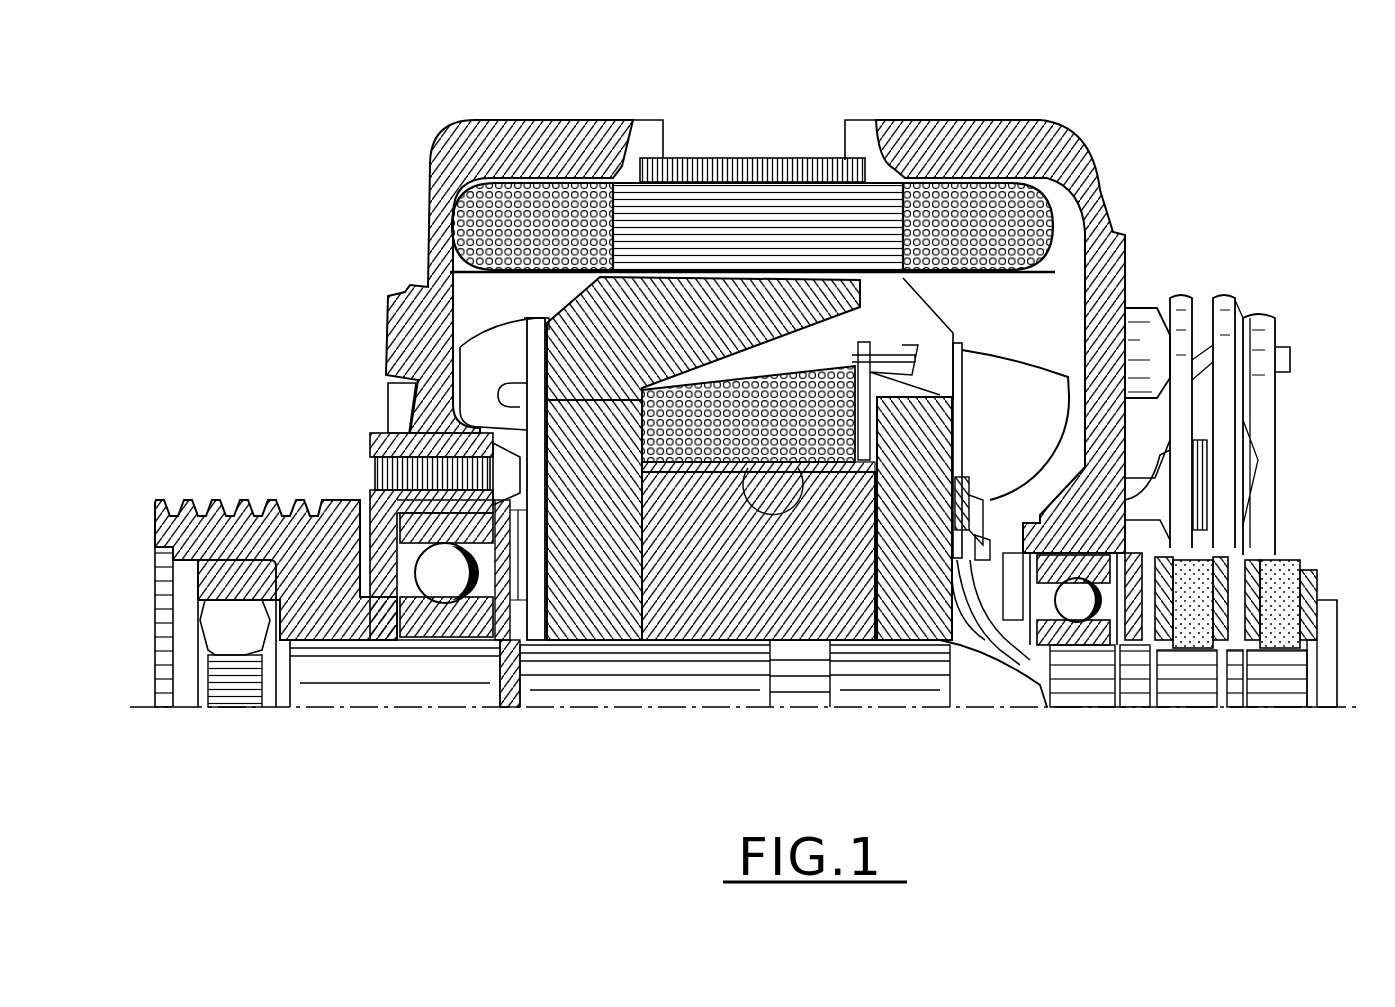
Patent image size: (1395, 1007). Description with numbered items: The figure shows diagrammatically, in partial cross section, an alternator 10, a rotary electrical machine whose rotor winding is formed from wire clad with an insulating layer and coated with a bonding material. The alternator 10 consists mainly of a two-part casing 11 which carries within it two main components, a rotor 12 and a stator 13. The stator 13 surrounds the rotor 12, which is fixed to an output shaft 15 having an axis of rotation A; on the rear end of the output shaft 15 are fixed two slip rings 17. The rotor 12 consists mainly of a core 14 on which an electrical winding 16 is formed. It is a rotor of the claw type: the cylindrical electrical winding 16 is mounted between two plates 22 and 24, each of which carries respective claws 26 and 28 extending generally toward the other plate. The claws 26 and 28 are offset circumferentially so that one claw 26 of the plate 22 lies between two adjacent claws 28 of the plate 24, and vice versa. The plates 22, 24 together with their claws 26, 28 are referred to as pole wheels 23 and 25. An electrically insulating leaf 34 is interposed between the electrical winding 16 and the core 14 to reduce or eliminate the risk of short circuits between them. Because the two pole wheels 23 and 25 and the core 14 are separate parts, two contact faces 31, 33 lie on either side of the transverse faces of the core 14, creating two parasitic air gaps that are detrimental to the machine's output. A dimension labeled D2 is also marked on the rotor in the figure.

The alternator 10 is at (1124, 148).
The two-part casing 11 is at (472, 148).
The rotor 12 is at (978, 336).
The stator 13 is at (536, 190).
The core 14 is at (880, 506).
The output shaft 15 is at (440, 677).
The electrical winding 16 is at (810, 378).
The slip rings 17 is at (1198, 693).
The plate 22 is at (917, 607).
The pole wheel 23 is at (1008, 678).
The plate 24 is at (565, 418).
The pole wheel 25 is at (546, 508).
The claws 26 is at (908, 286).
The claws 28 is at (697, 290).
The contact face 31 is at (870, 613).
The contact face 33 is at (645, 620).
The electrically insulating leaf 34 is at (703, 467).
The diameter D2 is at (768, 520).
The axis of rotation A is at (140, 710).